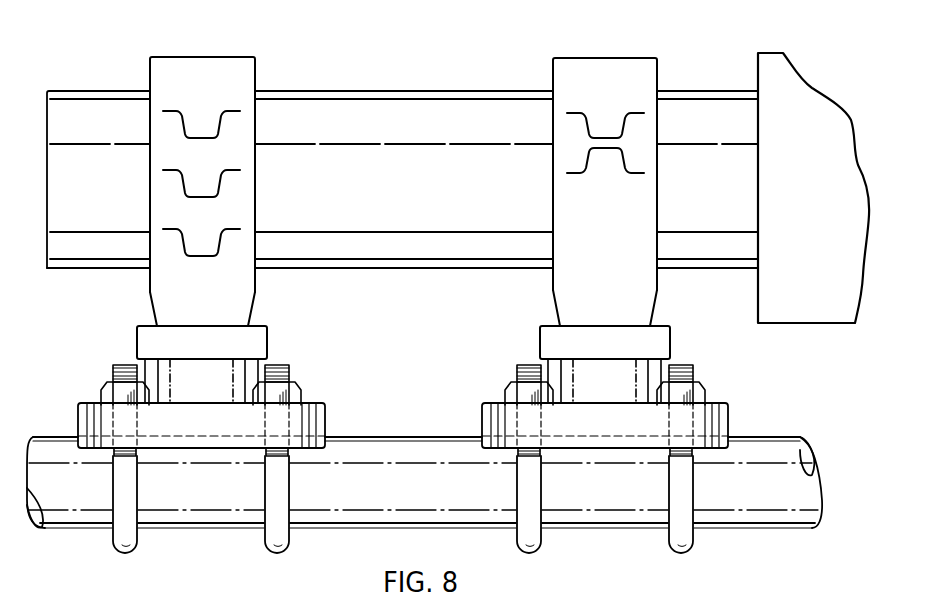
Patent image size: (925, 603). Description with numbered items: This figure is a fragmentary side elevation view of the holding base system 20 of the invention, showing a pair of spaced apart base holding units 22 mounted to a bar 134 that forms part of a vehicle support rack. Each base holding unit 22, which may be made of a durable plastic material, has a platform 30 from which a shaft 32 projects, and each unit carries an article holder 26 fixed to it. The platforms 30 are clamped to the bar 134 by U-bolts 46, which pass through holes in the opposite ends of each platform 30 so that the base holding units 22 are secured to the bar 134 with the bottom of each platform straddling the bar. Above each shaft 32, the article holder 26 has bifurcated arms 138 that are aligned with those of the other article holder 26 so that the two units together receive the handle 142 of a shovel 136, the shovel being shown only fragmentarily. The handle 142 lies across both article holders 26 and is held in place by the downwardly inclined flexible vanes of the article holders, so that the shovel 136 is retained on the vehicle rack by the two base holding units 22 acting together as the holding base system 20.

The holding base system 20 is at (93, 314).
The base holding unit 22 is at (73, 380).
The article holder 26 is at (300, 299).
The platform 30 is at (206, 389).
The shaft 32 is at (247, 347).
The U-bolt 46 is at (122, 522).
The bar 134 is at (412, 500).
The shovel 136 is at (821, 210).
The bifurcated arm 138 is at (162, 70).
The handle 142 is at (415, 188).